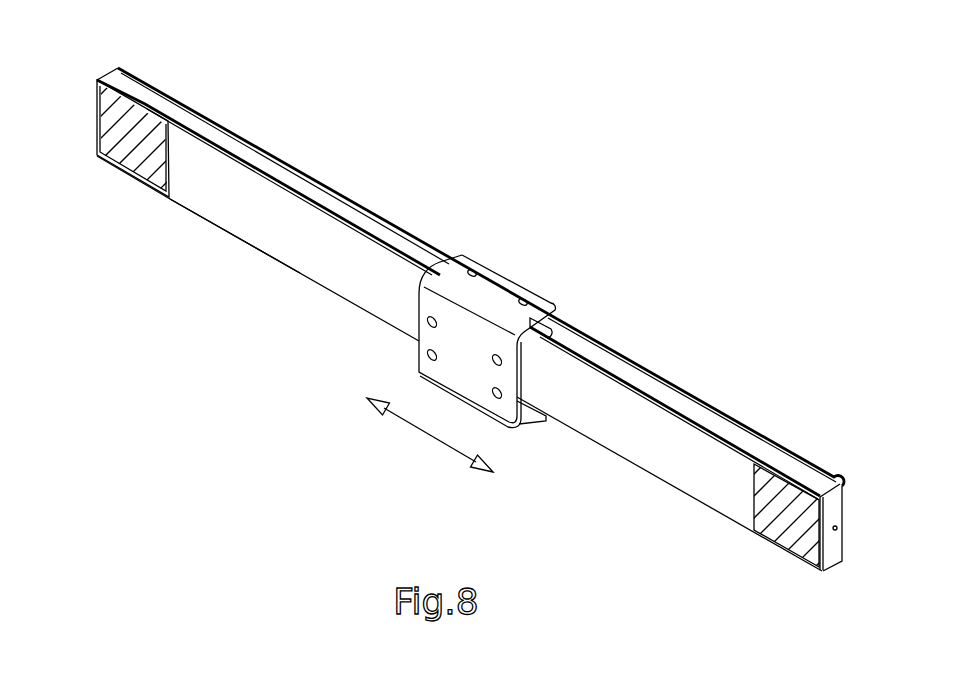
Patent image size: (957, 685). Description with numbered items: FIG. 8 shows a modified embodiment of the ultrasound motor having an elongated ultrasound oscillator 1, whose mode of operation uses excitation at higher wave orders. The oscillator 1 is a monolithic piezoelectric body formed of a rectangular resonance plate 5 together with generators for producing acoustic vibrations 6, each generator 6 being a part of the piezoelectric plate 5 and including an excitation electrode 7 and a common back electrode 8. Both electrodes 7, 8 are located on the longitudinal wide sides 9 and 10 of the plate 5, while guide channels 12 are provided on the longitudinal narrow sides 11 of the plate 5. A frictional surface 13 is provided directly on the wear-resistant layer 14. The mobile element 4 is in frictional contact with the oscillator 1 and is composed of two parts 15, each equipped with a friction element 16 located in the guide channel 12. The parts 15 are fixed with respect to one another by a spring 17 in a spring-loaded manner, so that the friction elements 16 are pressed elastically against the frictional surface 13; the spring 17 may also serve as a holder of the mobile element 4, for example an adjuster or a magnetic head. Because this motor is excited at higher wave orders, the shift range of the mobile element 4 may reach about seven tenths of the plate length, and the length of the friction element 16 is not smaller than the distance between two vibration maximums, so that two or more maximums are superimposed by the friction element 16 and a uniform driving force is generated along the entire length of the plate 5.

The ultrasound oscillator 1 is at (293, 142).
The mobile element 4 is at (422, 308).
The rectangular resonance plate 5 is at (688, 473).
The generator of acoustic vibrations 6 is at (110, 136).
The excitation electrode 7 is at (138, 149).
The common back electrode 8 is at (170, 79).
The longitudinal wide side 9 is at (298, 238).
The longitudinal wide side 10 is at (405, 228).
The longitudinal narrow side 11 is at (338, 198).
The guide channel 12 is at (695, 412).
The frictional surface 13 is at (637, 378).
The wear-resistant layer 14 is at (825, 487).
The part of the mobile element 15 is at (490, 280).
The friction element 16 is at (566, 314).
The spring 17 is at (450, 333).